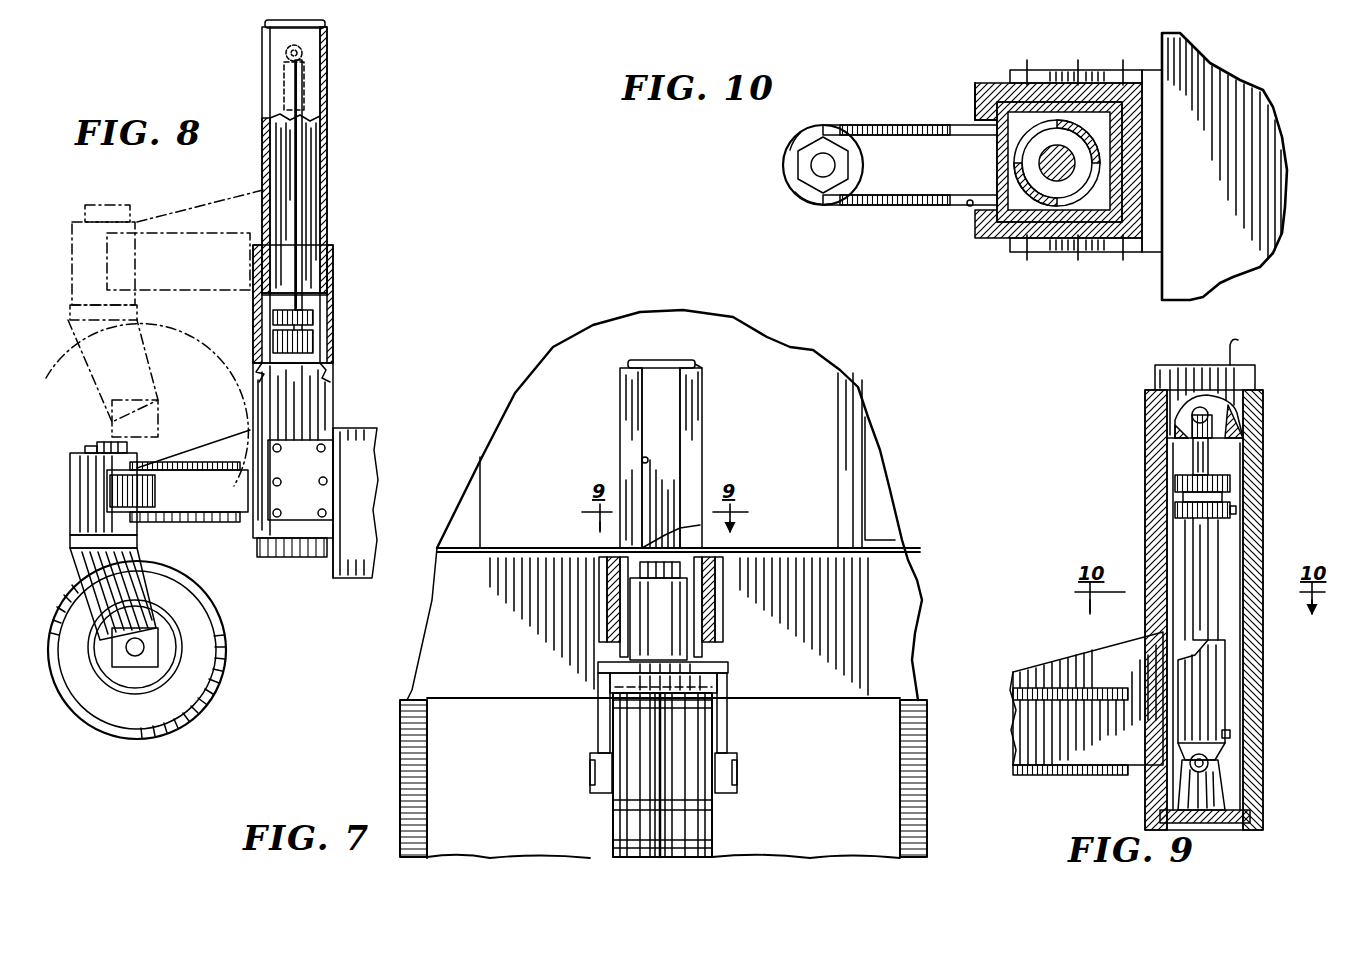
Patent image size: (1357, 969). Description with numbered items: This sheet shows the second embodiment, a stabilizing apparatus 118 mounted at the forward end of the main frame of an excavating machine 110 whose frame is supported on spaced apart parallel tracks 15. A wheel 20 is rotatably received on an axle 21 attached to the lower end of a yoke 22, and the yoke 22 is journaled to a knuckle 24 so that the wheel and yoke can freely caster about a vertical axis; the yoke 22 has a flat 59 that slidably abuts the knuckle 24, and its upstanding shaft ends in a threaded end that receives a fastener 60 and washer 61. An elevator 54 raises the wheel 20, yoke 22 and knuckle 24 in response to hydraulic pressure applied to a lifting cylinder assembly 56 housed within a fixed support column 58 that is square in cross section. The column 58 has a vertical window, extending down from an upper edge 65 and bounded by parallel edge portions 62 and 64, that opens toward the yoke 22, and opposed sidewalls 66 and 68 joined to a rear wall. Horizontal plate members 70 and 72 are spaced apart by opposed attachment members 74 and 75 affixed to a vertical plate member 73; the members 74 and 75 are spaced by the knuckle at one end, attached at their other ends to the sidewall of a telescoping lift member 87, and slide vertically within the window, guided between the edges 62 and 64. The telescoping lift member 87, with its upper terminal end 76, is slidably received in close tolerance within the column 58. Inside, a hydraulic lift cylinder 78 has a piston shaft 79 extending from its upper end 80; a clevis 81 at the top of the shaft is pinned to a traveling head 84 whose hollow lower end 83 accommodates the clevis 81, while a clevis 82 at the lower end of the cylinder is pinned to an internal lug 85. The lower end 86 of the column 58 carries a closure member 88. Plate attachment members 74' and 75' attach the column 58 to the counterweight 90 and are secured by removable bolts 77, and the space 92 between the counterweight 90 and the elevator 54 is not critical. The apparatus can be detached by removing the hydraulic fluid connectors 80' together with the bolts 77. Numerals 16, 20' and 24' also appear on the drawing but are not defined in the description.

In FIG. 7, the tracks 15 is at (905, 780).
In FIG. 7, the vehicle body 16 is at (798, 855).
In FIG. 8, the wheel 20 is at (157, 650).
In FIG. 7, the wheel 20 is at (689, 775).
In FIG. 8, the caster wheel half 20' is at (47, 359).
In FIG. 7, the caster wheel half 20' is at (615, 775).
In FIG. 7, the axle 21 is at (737, 772).
In FIG. 8, the yoke 22 is at (172, 608).
In FIG. 7, the yoke 22 is at (727, 730).
In FIG. 8, the knuckle 24 is at (87, 494).
In FIG. 7, the knuckle 24 is at (697, 616).
In FIG. 10, the knuckle 24 is at (802, 165).
In FIG. 8, the raised position of pivot tube 24' is at (55, 248).
In FIG. 8, the elevator 54 is at (340, 384).
In FIG. 8, the lifting cylinder assembly 56 is at (312, 312).
In FIG. 9, the lifting cylinder assembly 56 is at (1228, 690).
In FIG. 8, the fixed support column 58 is at (334, 258).
In FIG. 7, the fixed support column 58 is at (704, 468).
In FIG. 10, the fixed support column 58 is at (1148, 215).
In FIG. 9, the fixed support column 58 is at (1265, 551).
In FIG. 8, the flat 59 is at (70, 540).
In FIG. 7, the flat 59 is at (712, 664).
In FIG. 8, the fastener 60 is at (90, 447).
In FIG. 7, the fastener 60 is at (665, 560).
In FIG. 10, the fastener 60 is at (818, 160).
In FIG. 8, the washer 61 is at (85, 450).
In FIG. 7, the edge portion 62 is at (680, 433).
In FIG. 10, the edge portion 62 is at (978, 118).
In FIG. 7, the edge portion 64 is at (645, 460).
In FIG. 10, the edge portion 64 is at (968, 207).
In FIG. 7, the upper edge 65 is at (702, 365).
In FIG. 7, the sidewall 66 is at (723, 612).
In FIG. 7, the sidewall 68 is at (607, 570).
In FIG. 8, the horizontal plate member 70 is at (190, 522).
In FIG. 9, the horizontal plate member 70 is at (1078, 775).
In FIG. 8, the horizontal plate member 72 is at (190, 462).
In FIG. 9, the horizontal plate member 72 is at (1115, 685).
In FIG. 8, the vertical plate member 73 is at (200, 450).
In FIG. 8, the plate attachment member 74 is at (300, 480).
In FIG. 10, the plate attachment member 74 is at (910, 112).
In FIG. 8, the plate attachment member 74' is at (234, 421).
In FIG. 7, the plate attachment member 74' is at (742, 563).
In FIG. 10, the plate attachment member 74' is at (1052, 261).
In FIG. 8, the plate attachment member 75 is at (177, 491).
In FIG. 10, the plate attachment member 75 is at (910, 217).
In FIG. 7, the plate attachment member 75' is at (583, 599).
In FIG. 10, the plate attachment member 75' is at (1055, 60).
In FIG. 8, the upper terminal end 76 is at (325, 20).
In FIG. 7, the upper terminal end 76 is at (680, 358).
In FIG. 9, the upper terminal end 76 is at (1247, 345).
In FIG. 8, the bolts 77 is at (325, 482).
In FIG. 7, the bolts 77 is at (715, 635).
In FIG. 10, the bolts 77 is at (1060, 280).
In FIG. 8, the hydraulic lift cylinder 78 is at (262, 355).
In FIG. 10, the hydraulic lift cylinder 78 is at (1098, 148).
In FIG. 9, the hydraulic lift cylinder 78 is at (1225, 655).
In FIG. 8, the piston shaft 79 is at (302, 170).
In FIG. 10, the piston shaft 79 is at (1075, 167).
In FIG. 9, the piston shaft 79 is at (1275, 605).
In FIG. 8, the upper end 80 is at (264, 331).
In FIG. 9, the upper end 80 is at (1240, 488).
In FIG. 9, the hydraulic fluid connectors 80' is at (1248, 614).
In FIG. 8, the clevis 81 is at (280, 53).
In FIG. 9, the clevis 81 is at (1208, 415).
In FIG. 9, the clevis 82 is at (1210, 765).
In FIG. 9, the lower end 83 is at (1225, 440).
In FIG. 8, the traveling head 84 is at (310, 53).
In FIG. 9, the traveling head 84 is at (1243, 375).
In FIG. 9, the internal lug 85 is at (1225, 795).
In FIG. 8, the lower end 86 is at (336, 545).
In FIG. 8, the telescoping lift member 87 is at (327, 228).
In FIG. 7, the telescoping lift member 87 is at (645, 425).
In FIG. 10, the telescoping lift member 87 is at (1118, 190).
In FIG. 9, the telescoping lift member 87 is at (1246, 522).
In FIG. 8, the closure member 88 is at (255, 550).
In FIG. 10, the counterweight 90 is at (1224, 166).
In FIG. 8, the space 92 is at (338, 455).
In FIG. 10, the space 92 is at (1152, 115).
In FIG. 8, the excavating machine 110 is at (365, 318).
In FIG. 8, the stabilizing apparatus 118 is at (65, 315).
In FIG. 7, the stabilizing apparatus 118 is at (778, 680).
In FIG. 10, the stabilizing apparatus 118 is at (926, 66).
In FIG. 9, the stabilizing apparatus 118 is at (1115, 572).